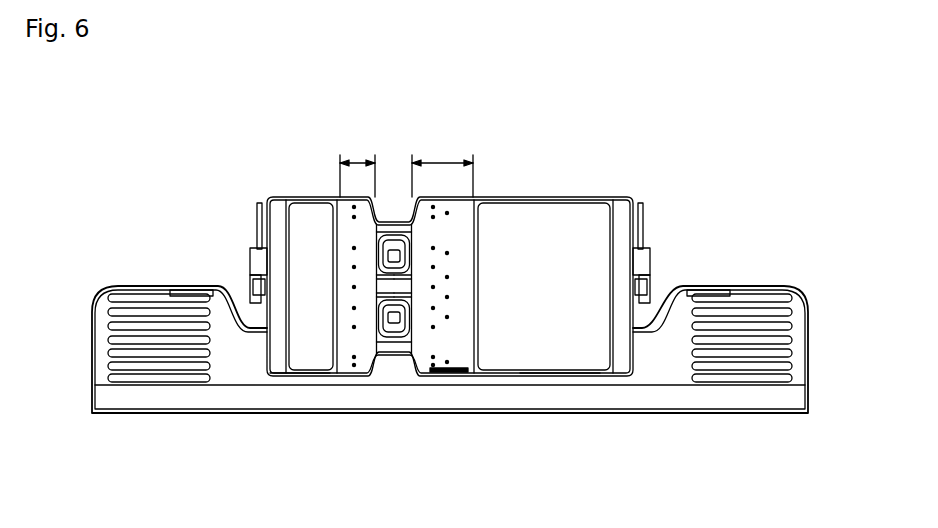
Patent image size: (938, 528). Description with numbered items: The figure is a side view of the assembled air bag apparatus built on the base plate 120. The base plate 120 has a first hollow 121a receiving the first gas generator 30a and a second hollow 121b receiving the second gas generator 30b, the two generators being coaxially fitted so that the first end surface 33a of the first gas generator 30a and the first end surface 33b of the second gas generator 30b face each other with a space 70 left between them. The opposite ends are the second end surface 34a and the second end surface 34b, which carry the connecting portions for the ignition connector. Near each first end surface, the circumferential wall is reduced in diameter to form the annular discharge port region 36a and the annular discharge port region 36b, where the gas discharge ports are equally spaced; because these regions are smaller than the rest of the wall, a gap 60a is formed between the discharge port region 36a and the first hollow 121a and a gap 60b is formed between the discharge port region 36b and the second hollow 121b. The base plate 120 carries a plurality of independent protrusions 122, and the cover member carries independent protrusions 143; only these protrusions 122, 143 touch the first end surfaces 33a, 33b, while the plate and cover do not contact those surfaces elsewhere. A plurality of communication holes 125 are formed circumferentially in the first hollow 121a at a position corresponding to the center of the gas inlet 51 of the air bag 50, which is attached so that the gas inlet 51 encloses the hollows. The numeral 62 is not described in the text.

The first gas generator 30a is at (538, 219).
The second gas generator 30b is at (308, 221).
The annular discharge port region 36a is at (442, 161).
The annular discharge port region 36b is at (356, 161).
The module frame 62 is at (460, 200).
The second end surface 34a is at (643, 222).
The second end surface 34b is at (262, 228).
The first end surface 33a is at (376, 293).
The first end surface 33b is at (412, 285).
The protrusions 143 is at (394, 257).
The protrusions 122 is at (394, 317).
The gas inlet 51 is at (726, 294).
The base plate 120 is at (808, 348).
The air bag 50 is at (738, 388).
The first hollow 121a is at (547, 377).
The second hollow 121b is at (300, 377).
The space 70 is at (393, 346).
The communication holes 125 is at (450, 372).
The gap 60a is at (426, 368).
The gap 60b is at (356, 368).